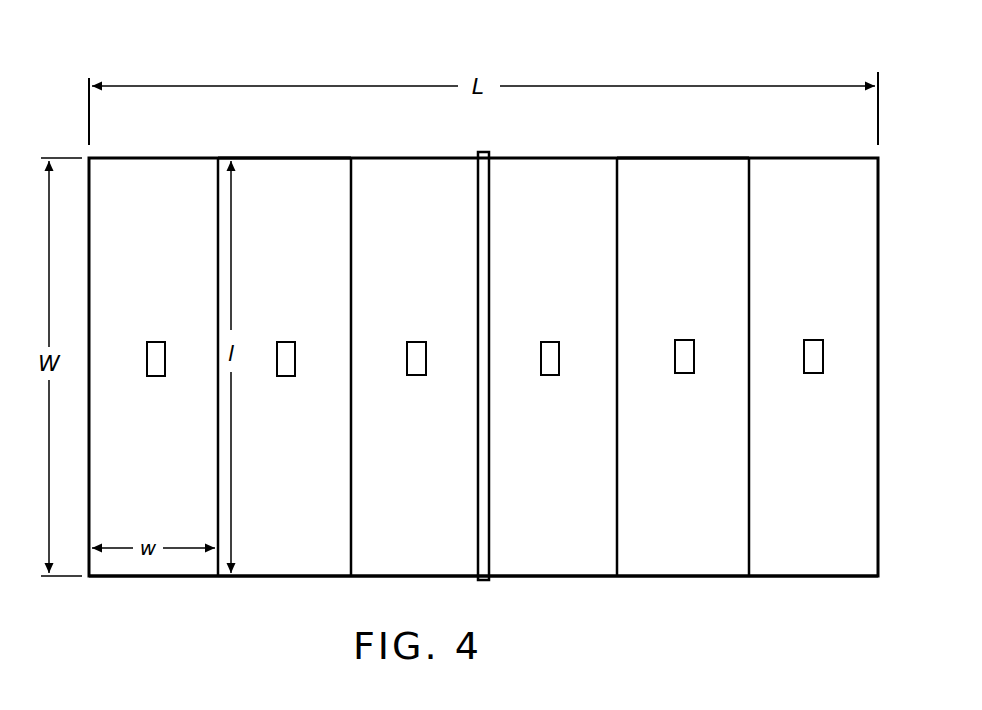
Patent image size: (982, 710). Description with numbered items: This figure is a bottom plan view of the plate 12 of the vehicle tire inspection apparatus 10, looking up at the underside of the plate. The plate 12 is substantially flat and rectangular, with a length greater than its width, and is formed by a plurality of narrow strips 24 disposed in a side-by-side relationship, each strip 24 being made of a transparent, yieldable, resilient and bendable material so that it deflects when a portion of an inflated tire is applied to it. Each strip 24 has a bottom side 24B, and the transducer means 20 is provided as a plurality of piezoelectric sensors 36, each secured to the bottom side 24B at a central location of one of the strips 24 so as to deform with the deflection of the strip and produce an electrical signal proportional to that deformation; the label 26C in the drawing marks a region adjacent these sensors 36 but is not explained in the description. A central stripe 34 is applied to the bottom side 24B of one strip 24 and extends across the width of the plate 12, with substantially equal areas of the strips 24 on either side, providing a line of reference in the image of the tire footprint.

The vehicle tire inspection apparatus 10 is at (714, 50).
The plate 12 is at (290, 580).
The transducer means 20 is at (314, 395).
The strip 24 is at (141, 491).
The bottom side of strip 24B is at (376, 180).
The switch region 26C is at (575, 392).
The stripe 34 is at (491, 238).
The piezoelectric sensor 36 is at (152, 318).